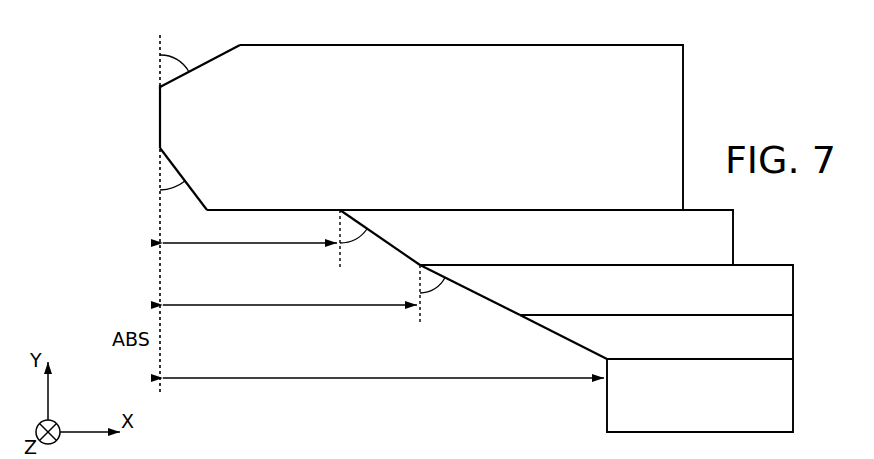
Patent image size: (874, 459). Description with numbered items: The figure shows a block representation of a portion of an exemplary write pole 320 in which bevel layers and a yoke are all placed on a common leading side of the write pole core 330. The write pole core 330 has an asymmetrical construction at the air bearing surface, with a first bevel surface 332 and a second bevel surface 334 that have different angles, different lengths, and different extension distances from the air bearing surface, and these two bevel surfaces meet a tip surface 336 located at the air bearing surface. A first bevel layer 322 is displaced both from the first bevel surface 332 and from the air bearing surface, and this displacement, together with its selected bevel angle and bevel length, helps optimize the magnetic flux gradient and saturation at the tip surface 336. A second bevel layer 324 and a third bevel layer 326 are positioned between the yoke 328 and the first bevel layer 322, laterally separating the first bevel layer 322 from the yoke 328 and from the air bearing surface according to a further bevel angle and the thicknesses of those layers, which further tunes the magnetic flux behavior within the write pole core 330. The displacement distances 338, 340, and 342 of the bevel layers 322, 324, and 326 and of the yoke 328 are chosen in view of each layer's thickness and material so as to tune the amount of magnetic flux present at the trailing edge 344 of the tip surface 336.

The write pole 320 is at (125, 42).
The first bevel layer 322 is at (536, 237).
The second bevel layer 324 is at (606, 290).
The third bevel layer 326 is at (656, 337).
The yoke 328 is at (700, 395).
The write pole core 330 is at (445, 127).
The first bevel surface 332 is at (180, 172).
The second bevel surface 334 is at (205, 69).
The tip surface 336 is at (160, 145).
The displacement distance 338 is at (250, 231).
The displacement distance 340 is at (290, 293).
The displacement distance 342 is at (383, 389).
The trailing edge 344 is at (157, 84).